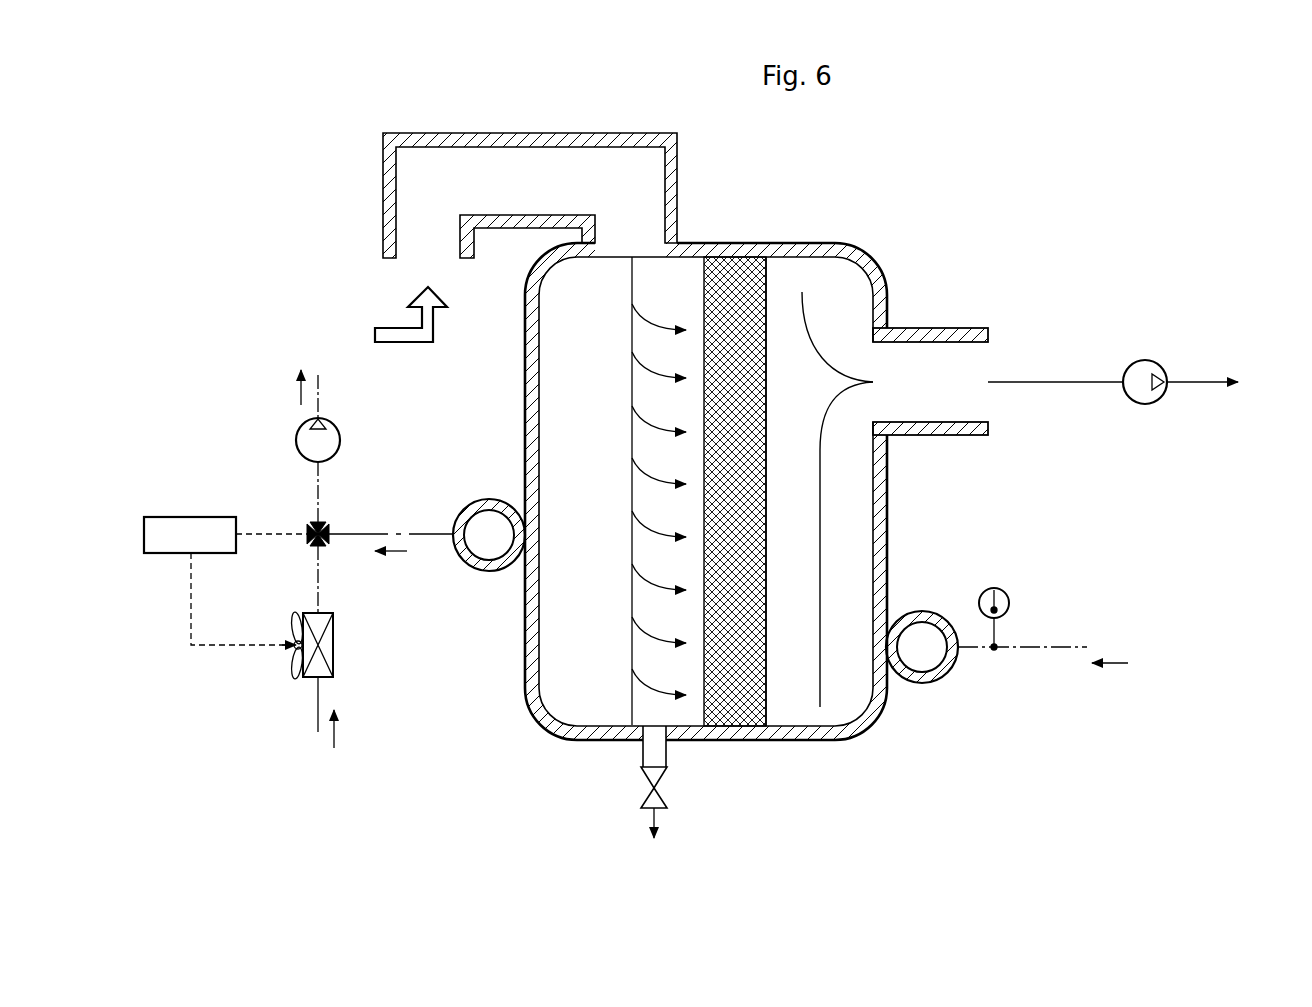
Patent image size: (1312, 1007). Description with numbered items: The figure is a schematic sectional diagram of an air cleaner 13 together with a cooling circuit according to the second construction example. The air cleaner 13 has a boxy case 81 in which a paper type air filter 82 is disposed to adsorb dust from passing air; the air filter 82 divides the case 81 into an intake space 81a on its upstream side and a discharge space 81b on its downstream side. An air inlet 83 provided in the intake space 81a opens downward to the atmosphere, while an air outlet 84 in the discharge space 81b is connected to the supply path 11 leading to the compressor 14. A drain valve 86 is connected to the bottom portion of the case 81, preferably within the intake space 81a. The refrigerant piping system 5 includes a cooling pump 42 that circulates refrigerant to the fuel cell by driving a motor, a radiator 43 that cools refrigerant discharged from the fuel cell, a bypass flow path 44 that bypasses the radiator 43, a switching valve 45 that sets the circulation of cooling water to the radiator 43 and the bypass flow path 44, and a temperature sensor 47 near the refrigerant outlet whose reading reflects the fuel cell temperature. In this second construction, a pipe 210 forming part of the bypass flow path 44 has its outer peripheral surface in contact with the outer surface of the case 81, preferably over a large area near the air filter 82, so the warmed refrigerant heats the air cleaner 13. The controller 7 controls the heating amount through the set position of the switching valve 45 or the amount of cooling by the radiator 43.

The air cleaner 13 is at (718, 187).
The case 81 is at (722, 243).
The air filter 82 is at (768, 276).
The intake space 81a is at (571, 700).
The discharge space 81b is at (841, 276).
The air inlet 83 is at (408, 260).
The air outlet 84 is at (955, 352).
The supply path 11 is at (1088, 384).
The compressor 14 is at (1147, 358).
The pipe 210 is at (490, 500).
The bypass flow path 44 is at (410, 528).
The switching valve 45 is at (326, 527).
The cooling pump 42 is at (341, 440).
The controller 7 is at (200, 517).
The radiator 43 is at (292, 625).
The temperature sensor 47 is at (1010, 606).
The refrigerant piping system 5 is at (1021, 660).
The drain valve 86 is at (668, 795).